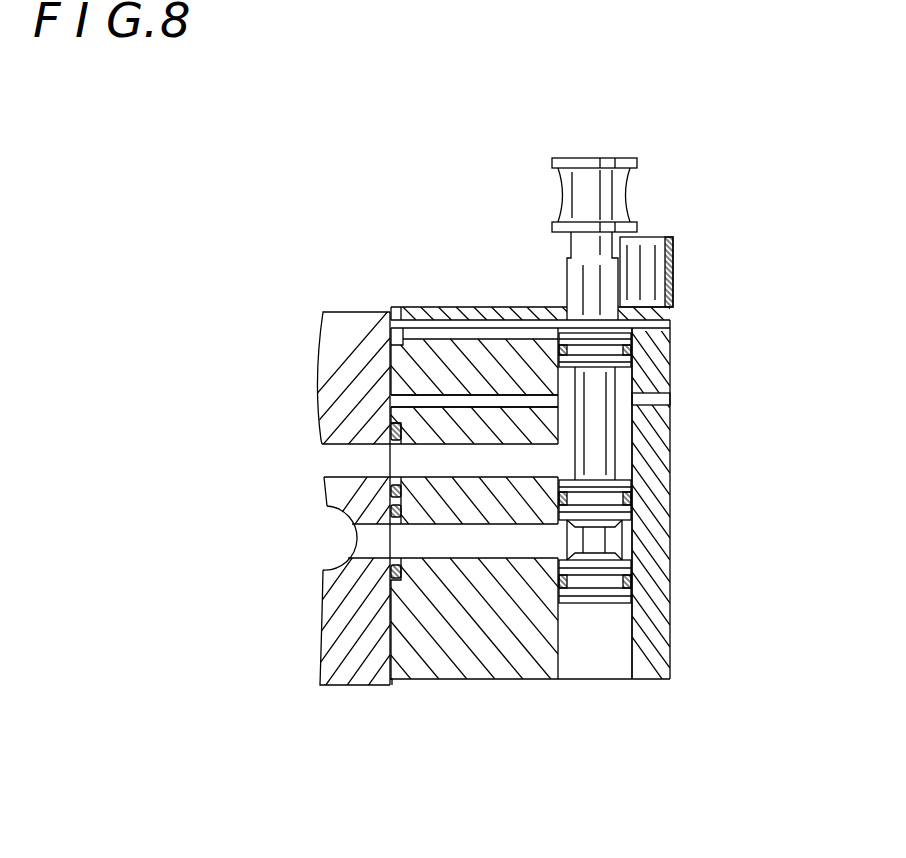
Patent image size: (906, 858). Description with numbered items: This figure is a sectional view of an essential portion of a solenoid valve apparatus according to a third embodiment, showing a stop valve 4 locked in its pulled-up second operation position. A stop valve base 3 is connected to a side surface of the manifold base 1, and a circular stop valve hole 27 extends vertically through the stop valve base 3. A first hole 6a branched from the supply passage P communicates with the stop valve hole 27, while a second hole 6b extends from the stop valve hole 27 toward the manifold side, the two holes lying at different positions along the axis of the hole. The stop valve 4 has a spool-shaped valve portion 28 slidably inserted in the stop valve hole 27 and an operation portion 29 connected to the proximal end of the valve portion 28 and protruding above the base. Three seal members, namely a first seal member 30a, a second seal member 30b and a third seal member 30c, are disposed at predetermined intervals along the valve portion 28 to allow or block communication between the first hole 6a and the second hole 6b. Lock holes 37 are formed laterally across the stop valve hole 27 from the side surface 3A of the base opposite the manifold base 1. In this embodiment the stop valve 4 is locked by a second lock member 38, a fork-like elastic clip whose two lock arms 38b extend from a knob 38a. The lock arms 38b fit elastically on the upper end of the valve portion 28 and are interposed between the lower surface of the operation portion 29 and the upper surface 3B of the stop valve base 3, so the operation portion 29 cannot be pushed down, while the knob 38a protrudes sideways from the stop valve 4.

The manifold base 1 is at (368, 662).
The stop valve base 3 is at (450, 640).
The side surface 3A is at (672, 662).
The upper surface 3B is at (487, 307).
The stop valve 4 is at (595, 191).
The first hole 6a is at (340, 466).
The second hole 6b is at (428, 555).
The supply passage P is at (342, 538).
The stop valve hole 27 is at (566, 650).
The valve portion 28 is at (617, 455).
The operation portion 29 is at (577, 180).
The first seal member 30a is at (630, 352).
The second seal member 30b is at (632, 500).
The third seal member 30c is at (632, 585).
The lock hole 37 is at (660, 401).
The second lock member 38 is at (688, 232).
The knob 38a is at (672, 270).
The lock arm 38b is at (625, 257).